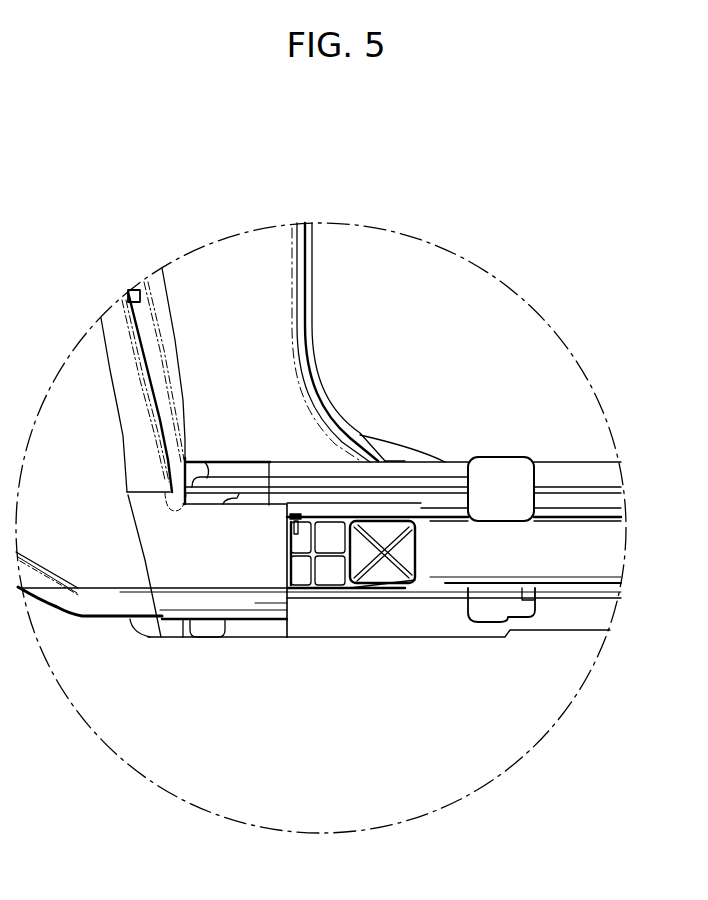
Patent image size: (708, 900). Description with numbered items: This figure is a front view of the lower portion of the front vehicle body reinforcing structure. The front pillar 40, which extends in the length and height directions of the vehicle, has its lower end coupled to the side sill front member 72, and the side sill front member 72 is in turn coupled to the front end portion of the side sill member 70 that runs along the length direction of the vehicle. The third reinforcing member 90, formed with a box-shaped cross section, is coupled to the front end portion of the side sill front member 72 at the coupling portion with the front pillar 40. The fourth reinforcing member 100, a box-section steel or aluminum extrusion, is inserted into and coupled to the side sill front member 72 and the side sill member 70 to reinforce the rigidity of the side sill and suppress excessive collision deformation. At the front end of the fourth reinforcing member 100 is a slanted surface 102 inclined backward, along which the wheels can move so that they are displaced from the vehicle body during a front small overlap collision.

The front pillar 40 is at (292, 398).
The side sill member 70 is at (545, 622).
The side sill front member 72 is at (373, 632).
The third reinforcing member 90 is at (255, 575).
The fourth reinforcing member 100 is at (445, 565).
The slanted surface 102 is at (323, 578).